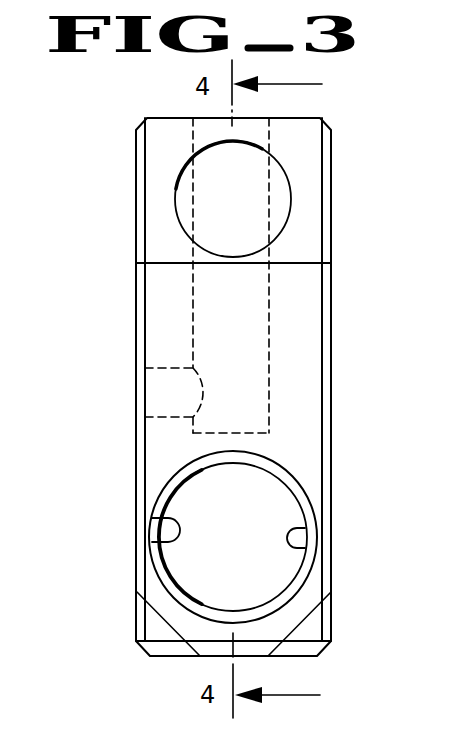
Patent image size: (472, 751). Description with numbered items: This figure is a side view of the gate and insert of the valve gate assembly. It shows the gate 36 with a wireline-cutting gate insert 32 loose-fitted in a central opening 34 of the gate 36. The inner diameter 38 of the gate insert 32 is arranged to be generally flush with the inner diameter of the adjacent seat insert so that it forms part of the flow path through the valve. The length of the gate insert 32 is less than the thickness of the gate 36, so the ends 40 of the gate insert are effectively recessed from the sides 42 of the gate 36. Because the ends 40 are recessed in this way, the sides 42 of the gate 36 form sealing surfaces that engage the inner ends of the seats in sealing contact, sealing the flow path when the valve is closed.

The wireline-cutting gate insert 32 is at (165, 495).
The central opening 34 is at (182, 539).
The gate 36 is at (308, 292).
The inner diameter of the gate insert 38 is at (290, 548).
The ends of the gate insert 40 is at (298, 493).
The sides of the gate 42 is at (303, 380).